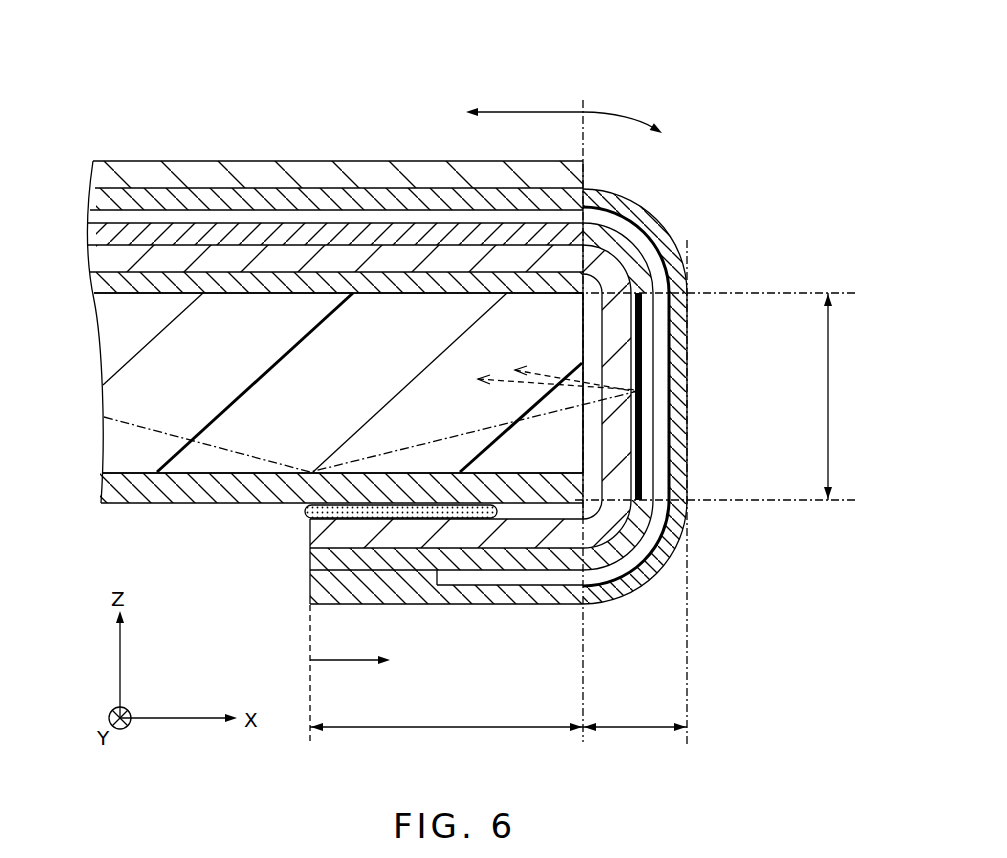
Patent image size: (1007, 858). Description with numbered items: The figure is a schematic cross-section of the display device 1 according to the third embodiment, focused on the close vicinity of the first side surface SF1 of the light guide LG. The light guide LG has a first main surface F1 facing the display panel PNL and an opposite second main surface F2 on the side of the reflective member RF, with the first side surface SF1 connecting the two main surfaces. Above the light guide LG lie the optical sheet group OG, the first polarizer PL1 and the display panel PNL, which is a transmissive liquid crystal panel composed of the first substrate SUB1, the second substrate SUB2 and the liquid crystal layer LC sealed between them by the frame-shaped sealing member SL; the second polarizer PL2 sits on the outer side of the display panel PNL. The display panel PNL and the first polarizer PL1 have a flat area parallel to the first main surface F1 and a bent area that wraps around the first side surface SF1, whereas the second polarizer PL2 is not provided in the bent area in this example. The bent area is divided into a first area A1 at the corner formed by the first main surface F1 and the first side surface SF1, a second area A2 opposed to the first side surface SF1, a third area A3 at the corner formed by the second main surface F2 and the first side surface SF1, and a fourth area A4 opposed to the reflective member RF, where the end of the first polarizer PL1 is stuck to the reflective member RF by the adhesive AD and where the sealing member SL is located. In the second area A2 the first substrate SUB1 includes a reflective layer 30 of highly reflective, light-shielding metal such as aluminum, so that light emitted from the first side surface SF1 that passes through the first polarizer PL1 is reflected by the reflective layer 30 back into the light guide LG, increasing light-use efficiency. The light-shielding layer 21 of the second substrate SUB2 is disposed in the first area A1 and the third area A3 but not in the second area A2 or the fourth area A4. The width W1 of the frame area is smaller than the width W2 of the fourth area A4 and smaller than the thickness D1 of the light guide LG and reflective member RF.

The display device 1 is at (130, 91).
The first polarizer PL1 is at (137, 257).
The second polarizer PL2 is at (190, 176).
The first substrate SUB1 is at (288, 240).
The second substrate SUB2 is at (262, 207).
The liquid crystal layer LC is at (272, 218).
The display panel PNL is at (362, 53).
The optical sheet group OG is at (255, 294).
The light guide LG is at (201, 460).
The first main surface F1 is at (377, 307).
The second main surface F2 is at (425, 460).
The first side surface SF1 is at (570, 348).
The reflective member RF is at (167, 478).
The adhesive AD is at (303, 517).
The sealing member SL is at (312, 574).
The light-shielding layer 21 is at (682, 262).
The reflective layer 30 is at (644, 357).
The first area A1 is at (687, 216).
The second area A2 is at (717, 405).
The third area A3 is at (677, 594).
The fourth area A4 is at (446, 629).
The thickness of the light guide and reflective member D1 is at (843, 396).
The width of the frame area W1 is at (635, 740).
The width of the fourth area W2 is at (446, 740).